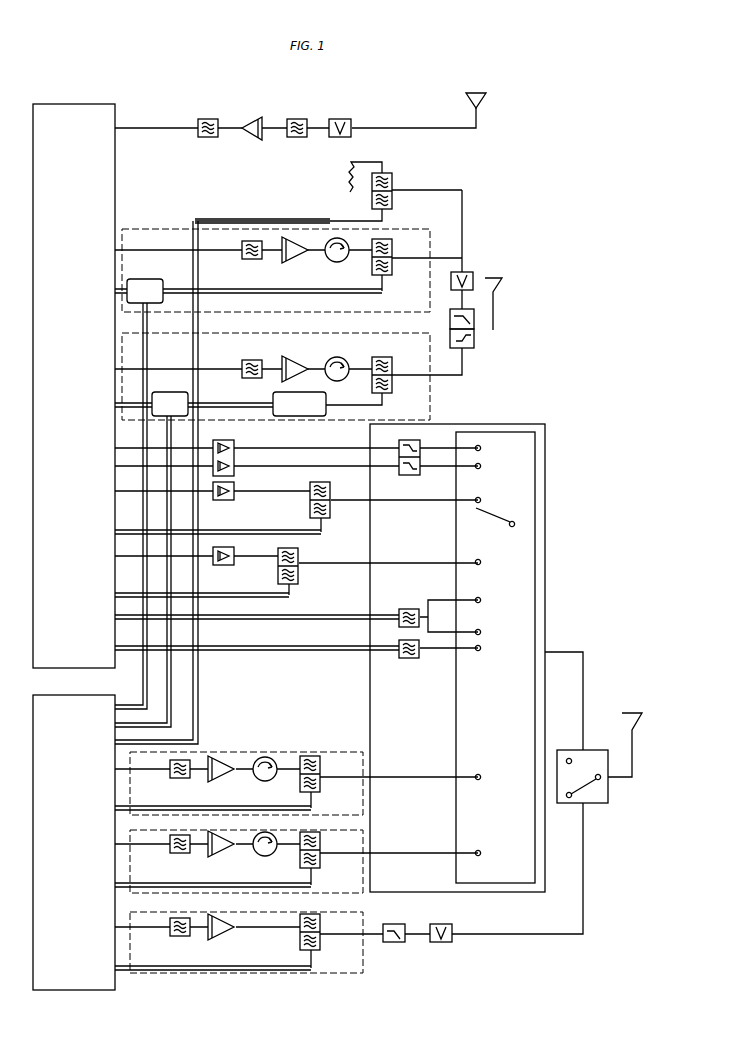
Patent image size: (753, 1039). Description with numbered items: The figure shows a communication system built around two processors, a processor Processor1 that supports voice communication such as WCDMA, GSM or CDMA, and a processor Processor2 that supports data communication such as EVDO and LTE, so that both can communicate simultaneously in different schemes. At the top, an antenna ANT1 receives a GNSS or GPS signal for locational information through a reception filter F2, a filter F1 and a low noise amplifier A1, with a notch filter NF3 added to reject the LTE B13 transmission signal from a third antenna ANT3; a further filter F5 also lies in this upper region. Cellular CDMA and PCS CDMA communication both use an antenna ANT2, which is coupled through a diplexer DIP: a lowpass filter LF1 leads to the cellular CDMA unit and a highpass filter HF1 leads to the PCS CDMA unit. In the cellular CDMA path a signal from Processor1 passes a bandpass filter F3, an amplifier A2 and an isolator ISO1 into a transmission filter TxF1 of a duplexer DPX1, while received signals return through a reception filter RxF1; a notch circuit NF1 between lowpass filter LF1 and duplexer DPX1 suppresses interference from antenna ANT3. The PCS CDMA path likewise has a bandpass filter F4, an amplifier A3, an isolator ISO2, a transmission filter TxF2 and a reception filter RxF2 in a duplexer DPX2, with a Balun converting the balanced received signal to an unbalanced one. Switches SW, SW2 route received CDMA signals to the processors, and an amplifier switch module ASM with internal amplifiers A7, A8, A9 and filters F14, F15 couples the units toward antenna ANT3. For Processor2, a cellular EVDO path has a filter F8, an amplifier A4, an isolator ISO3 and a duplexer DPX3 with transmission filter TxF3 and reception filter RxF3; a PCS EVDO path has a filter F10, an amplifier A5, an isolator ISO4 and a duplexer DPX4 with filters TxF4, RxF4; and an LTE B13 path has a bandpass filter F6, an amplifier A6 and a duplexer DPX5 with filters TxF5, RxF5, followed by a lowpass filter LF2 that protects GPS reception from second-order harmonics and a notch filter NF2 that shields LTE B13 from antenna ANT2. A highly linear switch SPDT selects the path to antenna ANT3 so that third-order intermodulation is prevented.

The processor 1 Processor1 is at (74, 386).
The processor 2 Processor2 is at (74, 842).
The filter F1 is at (208, 137).
The low noise amplifier A1 is at (254, 136).
The reception filter F2 is at (297, 137).
The notch filter NF3 is at (339, 137).
The antenna ANT1 is at (495, 101).
The filter F5 is at (328, 191).
The bandpass filter F3 is at (252, 258).
The amplifier A2 is at (295, 256).
The isolator ISO1 is at (341, 259).
The duplexer DPX1 is at (378, 292).
The transmission filter TxF1 is at (408, 239).
The reception filter RxF1 is at (408, 266).
The lowpass filter LF1 is at (415, 323).
The switch SW is at (248, 494).
The switch SW2 is at (194, 559).
The notch circuit NF1 is at (471, 240).
The antenna ANT2 is at (512, 304).
The diplexer DIP is at (474, 319).
The highpass filter HF1 is at (453, 352).
The bandpass filter F4 is at (252, 361).
The amplifier A3 is at (295, 362).
The isolator ISO2 is at (341, 360).
The duplexer DPX2 is at (392, 387).
The transmission filter TxF2 is at (409, 358).
The reception filter RxF2 is at (408, 405).
The element Balun is at (299, 404).
The amplifier A7 is at (257, 450).
The amplifier A8 is at (212, 500).
The amplifier A9 is at (196, 565).
The filter F14 is at (296, 508).
The filter F15 is at (296, 573).
The amplifier switch module ASM is at (476, 658).
The switch SPDT is at (582, 788).
The antenna ANT3 is at (624, 738).
The filter F8 is at (180, 778).
The amplifier A4 is at (221, 776).
The isolator ISO3 is at (266, 780).
The duplexer DPX3 is at (320, 789).
The transmission filter TxF3 is at (336, 758).
The reception filter RxF3 is at (337, 798).
The filter F10 is at (180, 853).
The amplifier A5 is at (221, 851).
The isolator ISO4 is at (266, 855).
The duplexer DPX4 is at (320, 866).
The transmission filter TxF4 is at (336, 836).
The reception filter RxF4 is at (337, 874).
The bandpass filter F6 is at (180, 936).
The amplifier A6 is at (221, 934).
The duplexer DPX5 is at (298, 950).
The transmission filter TxF5 is at (336, 917).
The reception filter RxF5 is at (337, 958).
The lowpass filter LF2 is at (392, 944).
The notch filter NF2 is at (439, 944).